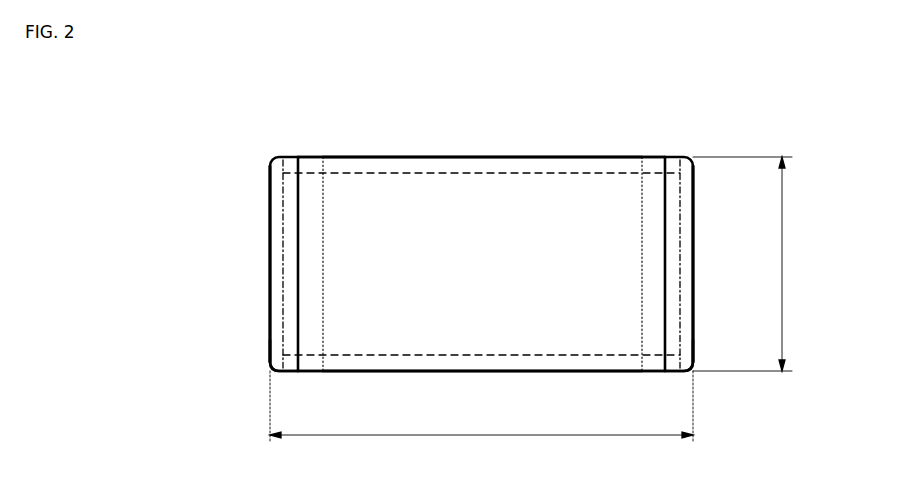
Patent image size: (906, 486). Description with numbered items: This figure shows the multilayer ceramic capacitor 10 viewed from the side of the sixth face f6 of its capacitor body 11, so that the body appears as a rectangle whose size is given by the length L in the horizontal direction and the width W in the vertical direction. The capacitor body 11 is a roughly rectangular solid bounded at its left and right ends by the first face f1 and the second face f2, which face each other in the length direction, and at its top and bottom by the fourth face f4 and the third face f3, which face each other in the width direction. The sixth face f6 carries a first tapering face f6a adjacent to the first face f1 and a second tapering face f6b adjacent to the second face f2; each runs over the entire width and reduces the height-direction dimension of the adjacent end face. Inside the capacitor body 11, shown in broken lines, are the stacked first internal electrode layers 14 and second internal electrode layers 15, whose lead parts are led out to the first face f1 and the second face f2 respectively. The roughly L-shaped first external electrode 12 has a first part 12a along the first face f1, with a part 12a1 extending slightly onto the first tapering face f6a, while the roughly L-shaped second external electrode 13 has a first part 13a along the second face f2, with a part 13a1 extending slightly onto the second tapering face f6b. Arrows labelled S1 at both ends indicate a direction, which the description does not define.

The multilayer ceramic capacitor 10 is at (385, 147).
The capacitor body 11 is at (433, 156).
The first external electrode 12 is at (270, 229).
The second external electrode 13 is at (693, 226).
The first internal electrode layer 14 is at (282, 179).
The second internal electrode layer 15 is at (678, 185).
The first part of first external electrode 12a is at (275, 319).
The part extending onto first tapering face 12a1 is at (290, 345).
The first part of second external electrode 13a is at (686, 320).
The part extending onto second tapering face 13a1 is at (676, 345).
The first face f1 is at (282, 295).
The second face f2 is at (693, 296).
The third face f3 is at (494, 372).
The fourth face f4 is at (492, 156).
The sixth face f6 is at (538, 188).
The first tapering face f6a is at (306, 163).
The second tapering face f6b is at (660, 160).
The direction S1 is at (262, 266).
The width W is at (748, 264).
The length L is at (481, 415).